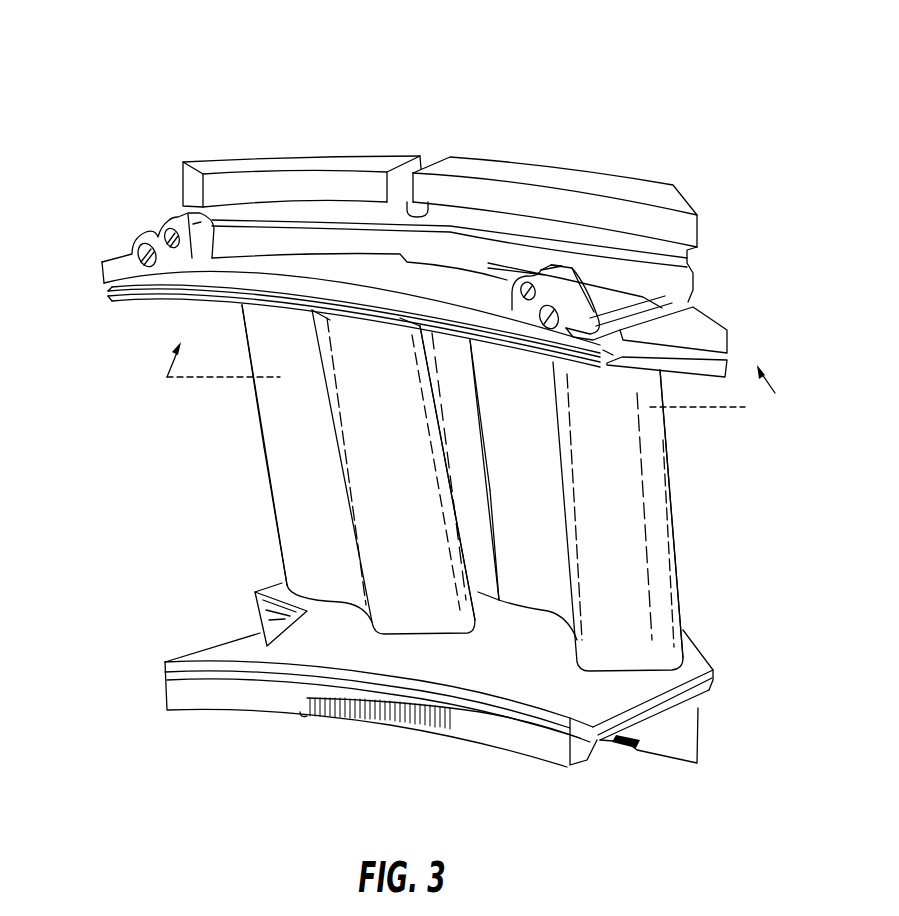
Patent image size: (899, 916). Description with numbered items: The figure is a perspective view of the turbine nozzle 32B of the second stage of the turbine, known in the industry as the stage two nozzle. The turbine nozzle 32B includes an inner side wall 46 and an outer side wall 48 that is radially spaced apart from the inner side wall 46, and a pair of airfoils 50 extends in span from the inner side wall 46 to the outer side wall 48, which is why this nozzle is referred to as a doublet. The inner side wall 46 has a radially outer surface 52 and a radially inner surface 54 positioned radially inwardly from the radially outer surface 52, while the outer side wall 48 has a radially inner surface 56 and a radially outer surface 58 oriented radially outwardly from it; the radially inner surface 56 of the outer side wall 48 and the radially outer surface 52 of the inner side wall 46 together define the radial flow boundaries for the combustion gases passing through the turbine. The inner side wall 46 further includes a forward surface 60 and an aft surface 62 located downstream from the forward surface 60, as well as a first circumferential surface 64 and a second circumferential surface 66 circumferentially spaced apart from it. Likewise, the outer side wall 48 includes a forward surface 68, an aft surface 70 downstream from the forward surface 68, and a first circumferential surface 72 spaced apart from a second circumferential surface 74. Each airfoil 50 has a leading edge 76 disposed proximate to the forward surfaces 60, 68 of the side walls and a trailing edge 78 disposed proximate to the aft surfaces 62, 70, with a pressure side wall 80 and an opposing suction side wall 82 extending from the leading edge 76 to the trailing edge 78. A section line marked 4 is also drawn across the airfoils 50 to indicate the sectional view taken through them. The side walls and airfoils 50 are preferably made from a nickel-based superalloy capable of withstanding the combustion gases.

The turbine nozzle 32B is at (228, 72).
The outer side wall 48 is at (128, 207).
The aft surface 70 is at (388, 150).
The first circumferential surface 72 is at (102, 270).
The radially inner surface 56 is at (170, 313).
The radially outer surface 58 is at (672, 308).
The second circumferential surface 74 is at (733, 339).
The airfoil 50 is at (248, 416).
The leading edge 76 is at (340, 483).
The trailing edge 78 is at (263, 447).
The pressure side wall 80 is at (320, 457).
The suction side wall 82 is at (430, 547).
The forward surface 68 is at (380, 298).
The section line 4- 4 is at (470, 374).
The inner side wall 46 is at (520, 770).
The first circumferential surface 64 is at (203, 645).
The aft surface 62 is at (282, 587).
The radially outer surface 52 is at (268, 640).
The forward surface 60 is at (247, 702).
The second circumferential surface 66 is at (700, 708).
The radially inner surface 54 is at (633, 747).